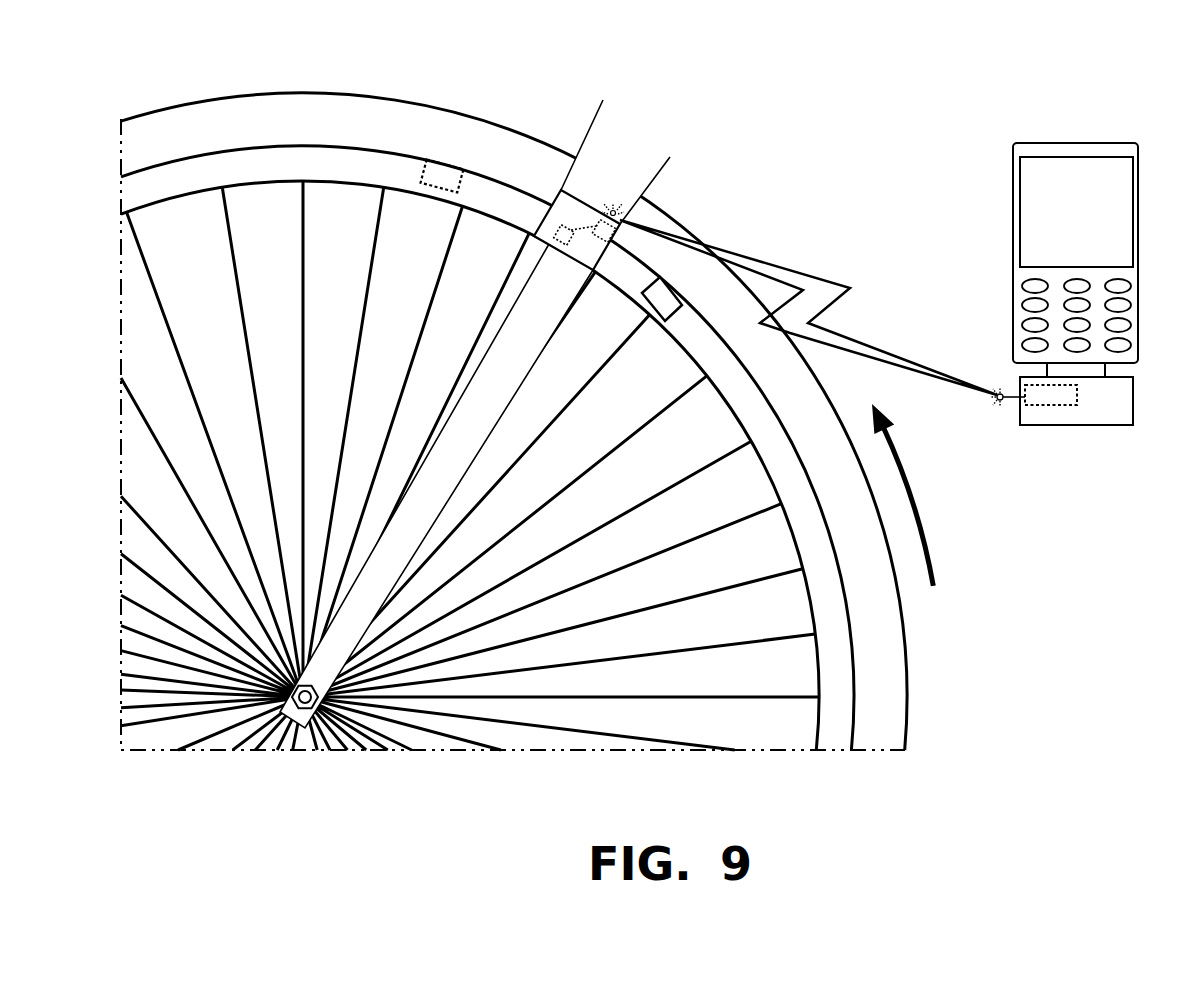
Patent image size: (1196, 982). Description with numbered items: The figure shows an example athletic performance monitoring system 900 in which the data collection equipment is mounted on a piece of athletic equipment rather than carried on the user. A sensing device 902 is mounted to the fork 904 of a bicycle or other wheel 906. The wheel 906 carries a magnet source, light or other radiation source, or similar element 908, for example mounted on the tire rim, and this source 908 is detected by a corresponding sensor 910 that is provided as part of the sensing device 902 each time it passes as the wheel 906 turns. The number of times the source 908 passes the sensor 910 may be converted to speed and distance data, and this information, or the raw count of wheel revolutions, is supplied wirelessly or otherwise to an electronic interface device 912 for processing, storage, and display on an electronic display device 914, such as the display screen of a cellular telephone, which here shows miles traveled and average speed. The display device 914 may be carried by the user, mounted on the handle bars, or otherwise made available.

The system 900 is at (1058, 597).
The sensing device 902 is at (551, 190).
The fork 904 is at (663, 168).
The wheel 906 is at (926, 766).
The source element 908 is at (437, 160).
The sensor 910 is at (570, 243).
The electronic interface device 912 is at (1072, 425).
The electronic display device 914 is at (1013, 253).